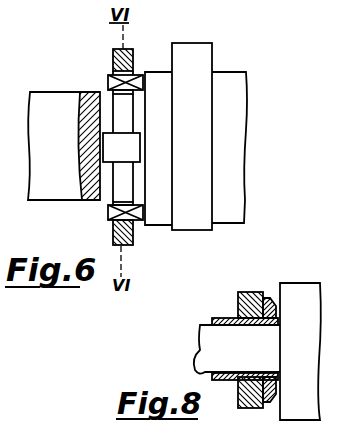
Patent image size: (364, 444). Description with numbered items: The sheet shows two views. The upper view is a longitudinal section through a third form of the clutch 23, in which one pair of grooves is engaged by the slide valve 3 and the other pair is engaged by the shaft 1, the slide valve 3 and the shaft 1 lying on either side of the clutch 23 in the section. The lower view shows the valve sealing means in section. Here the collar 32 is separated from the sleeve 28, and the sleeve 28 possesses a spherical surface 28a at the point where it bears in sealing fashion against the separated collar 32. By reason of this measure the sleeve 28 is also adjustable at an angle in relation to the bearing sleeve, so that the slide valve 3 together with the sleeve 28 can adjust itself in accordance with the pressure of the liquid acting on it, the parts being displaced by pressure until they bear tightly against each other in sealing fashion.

In FIG. 6, the shaft 1 is at (220, 100).
In FIG. 6, the slide valve 3 is at (60, 108).
In FIG. 8, the slide valve 3 is at (300, 318).
In FIG. 6, the clutch 23 is at (123, 54).
In FIG. 8, the sleeve 28 is at (268, 312).
In FIG. 8, the spherical surface 28a is at (238, 307).
In FIG. 8, the collar 32 is at (252, 291).